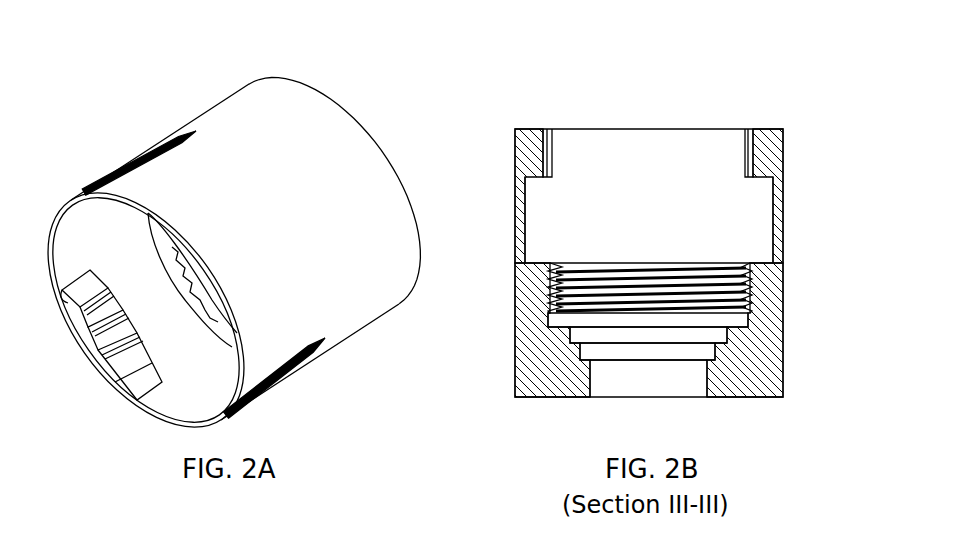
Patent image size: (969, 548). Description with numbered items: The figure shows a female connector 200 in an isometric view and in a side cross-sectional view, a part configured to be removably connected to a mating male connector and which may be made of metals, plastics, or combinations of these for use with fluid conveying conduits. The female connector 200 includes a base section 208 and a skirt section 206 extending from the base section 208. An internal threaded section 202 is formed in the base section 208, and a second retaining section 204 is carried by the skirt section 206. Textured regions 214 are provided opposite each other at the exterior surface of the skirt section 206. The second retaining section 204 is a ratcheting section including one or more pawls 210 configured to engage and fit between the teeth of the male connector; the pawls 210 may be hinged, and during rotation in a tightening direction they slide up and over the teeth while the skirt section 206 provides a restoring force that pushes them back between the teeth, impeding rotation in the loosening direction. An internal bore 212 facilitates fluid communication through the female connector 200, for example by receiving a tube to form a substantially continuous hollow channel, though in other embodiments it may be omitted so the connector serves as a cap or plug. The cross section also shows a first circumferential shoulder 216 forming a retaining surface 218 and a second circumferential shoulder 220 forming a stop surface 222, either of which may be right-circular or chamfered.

In FIG. 2A, the female connector 200 is at (132, 58).
In FIG. 2B, the female connector 200 is at (586, 93).
In FIG. 2B, the internal threaded section 202 is at (772, 318).
In FIG. 2A, the second retaining section 204 is at (103, 360).
In FIG. 2B, the second retaining section 204 is at (757, 140).
In FIG. 2A, the skirt section 206 is at (260, 337).
In FIG. 2B, the skirt section 206 is at (782, 220).
In FIG. 2A, the base section 208 is at (392, 287).
In FIG. 2B, the base section 208 is at (782, 380).
In FIG. 2A, the pawls 210 is at (83, 313).
In FIG. 2B, the internal bore 212 is at (600, 383).
In FIG. 2A, the textured regions 214 is at (133, 157).
In FIG. 2B, the first circumferential shoulder 216 is at (710, 373).
In FIG. 2B, the retaining surface 218 is at (643, 365).
In FIG. 2B, the second circumferential shoulder 220 is at (580, 343).
In FIG. 2B, the stop surface 222 is at (630, 340).